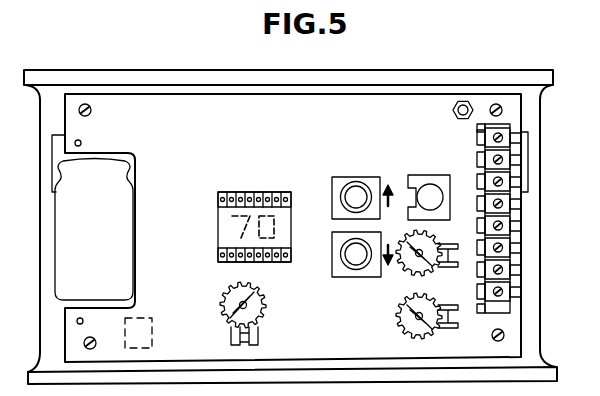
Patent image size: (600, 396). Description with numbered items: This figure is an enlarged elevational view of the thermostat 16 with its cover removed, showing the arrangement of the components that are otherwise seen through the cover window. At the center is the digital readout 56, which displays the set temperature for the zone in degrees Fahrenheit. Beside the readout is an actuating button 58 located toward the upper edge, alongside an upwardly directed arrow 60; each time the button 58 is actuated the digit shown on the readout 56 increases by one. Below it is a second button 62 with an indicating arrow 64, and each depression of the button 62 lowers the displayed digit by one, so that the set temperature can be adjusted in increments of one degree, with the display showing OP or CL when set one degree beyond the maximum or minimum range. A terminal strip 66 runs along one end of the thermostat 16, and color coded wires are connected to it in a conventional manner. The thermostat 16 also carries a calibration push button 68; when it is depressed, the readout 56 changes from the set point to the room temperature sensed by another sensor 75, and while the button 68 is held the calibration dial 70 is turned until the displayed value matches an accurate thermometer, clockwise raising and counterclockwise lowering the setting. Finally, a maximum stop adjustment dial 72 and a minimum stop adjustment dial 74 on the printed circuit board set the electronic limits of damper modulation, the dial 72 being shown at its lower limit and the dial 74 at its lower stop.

The thermostat 16 is at (398, 66).
The digital readout 56 is at (218, 228).
The actuating button 58 is at (357, 192).
The upwardly directed arrow 60 is at (388, 186).
The button 62 is at (355, 255).
The indicating arrow 64 is at (388, 265).
The terminal strip 66 is at (505, 132).
The calibration push button 68 is at (431, 195).
The calibration dial 70 is at (228, 300).
The maximum stop adjustment dial 72 is at (430, 270).
The minimum stop adjustment dial 74 is at (404, 325).
The sensor 75 is at (153, 332).